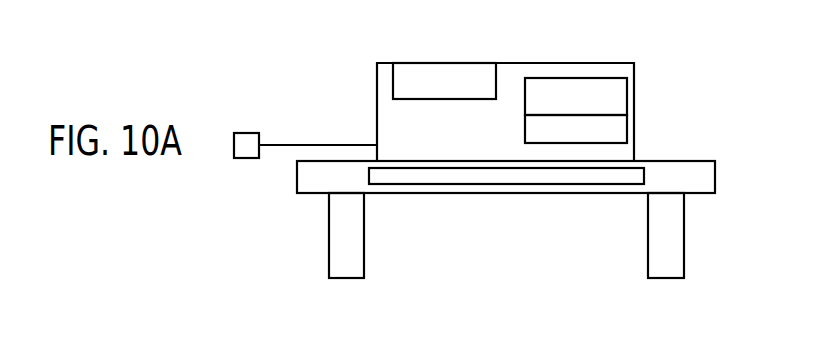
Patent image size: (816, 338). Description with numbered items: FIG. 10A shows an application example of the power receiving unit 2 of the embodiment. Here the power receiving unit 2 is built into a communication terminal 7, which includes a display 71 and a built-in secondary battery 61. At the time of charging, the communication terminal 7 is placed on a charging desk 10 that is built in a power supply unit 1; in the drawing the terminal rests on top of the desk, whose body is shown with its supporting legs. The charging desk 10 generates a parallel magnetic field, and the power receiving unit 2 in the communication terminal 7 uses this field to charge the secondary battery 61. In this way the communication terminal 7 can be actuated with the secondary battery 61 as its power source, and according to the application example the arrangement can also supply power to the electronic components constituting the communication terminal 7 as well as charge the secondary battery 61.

The power supply unit 1 is at (478, 185).
The power receiving unit 2 is at (627, 128).
The communication terminal 7 is at (510, 63).
The charging desk 10 is at (700, 160).
The secondary battery 61 is at (627, 95).
The display 71 is at (446, 63).